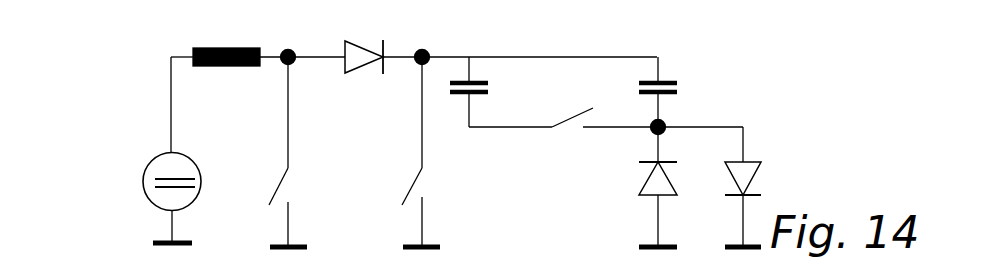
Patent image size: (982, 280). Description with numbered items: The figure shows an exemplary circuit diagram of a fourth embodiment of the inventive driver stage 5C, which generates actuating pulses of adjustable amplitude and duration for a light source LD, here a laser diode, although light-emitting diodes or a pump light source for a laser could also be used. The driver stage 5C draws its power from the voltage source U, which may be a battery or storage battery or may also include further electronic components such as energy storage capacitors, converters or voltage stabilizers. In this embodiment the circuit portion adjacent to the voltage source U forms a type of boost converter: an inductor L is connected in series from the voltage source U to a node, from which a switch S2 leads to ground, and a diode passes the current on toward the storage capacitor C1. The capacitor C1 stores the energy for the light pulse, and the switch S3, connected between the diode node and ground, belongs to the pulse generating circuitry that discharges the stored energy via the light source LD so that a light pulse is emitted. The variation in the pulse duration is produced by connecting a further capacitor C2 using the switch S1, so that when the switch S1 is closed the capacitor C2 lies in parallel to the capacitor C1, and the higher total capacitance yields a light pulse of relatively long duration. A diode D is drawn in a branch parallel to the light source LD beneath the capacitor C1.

The driver stage 5C is at (136, 58).
The inductor L is at (226, 79).
The voltage source U is at (151, 198).
The switch S2 is at (271, 152).
The switch S3 is at (403, 152).
The further capacitor C2 is at (501, 96).
The switch S1 is at (602, 104).
The capacitor C1 is at (674, 97).
The light source LD is at (615, 155).
The diode D is at (723, 187).